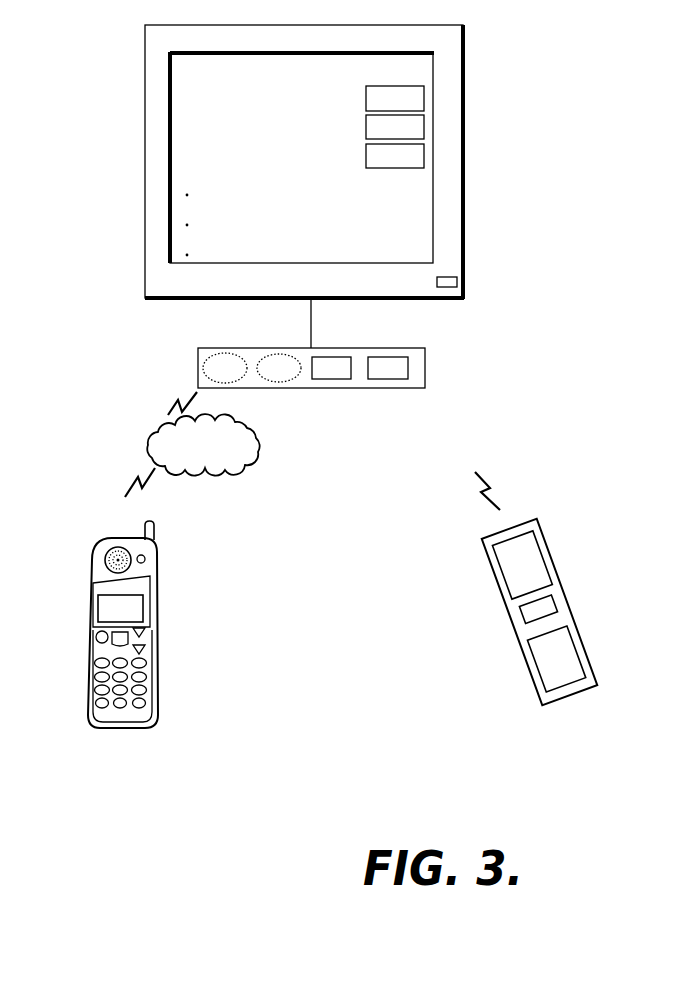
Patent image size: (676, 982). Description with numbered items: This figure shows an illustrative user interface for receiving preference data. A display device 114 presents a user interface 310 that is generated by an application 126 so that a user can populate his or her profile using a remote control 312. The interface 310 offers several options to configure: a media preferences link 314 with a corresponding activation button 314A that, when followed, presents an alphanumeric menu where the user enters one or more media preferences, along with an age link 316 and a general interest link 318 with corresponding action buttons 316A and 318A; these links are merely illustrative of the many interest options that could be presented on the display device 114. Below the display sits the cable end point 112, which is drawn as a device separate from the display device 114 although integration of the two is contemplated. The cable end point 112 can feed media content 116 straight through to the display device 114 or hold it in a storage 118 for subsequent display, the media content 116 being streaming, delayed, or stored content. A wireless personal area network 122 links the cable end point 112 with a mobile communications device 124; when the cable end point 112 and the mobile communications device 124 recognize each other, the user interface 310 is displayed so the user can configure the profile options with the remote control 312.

The display device 114 is at (451, 300).
The user interface 310 is at (302, 157).
The media preferences link 314 is at (182, 70).
The age link 316 is at (182, 128).
The general interest link 318 is at (182, 158).
The activation button 314A is at (424, 96).
The action button 316A is at (424, 125).
The action button 318A is at (424, 154).
The application 126 is at (198, 362).
The media content 116 is at (282, 384).
The storage 118 is at (330, 380).
The cable end point 112 is at (386, 380).
The wireless personal area network (PAN) 122 is at (200, 470).
The mobile communications device 124 is at (158, 722).
The remote control 312 is at (573, 615).